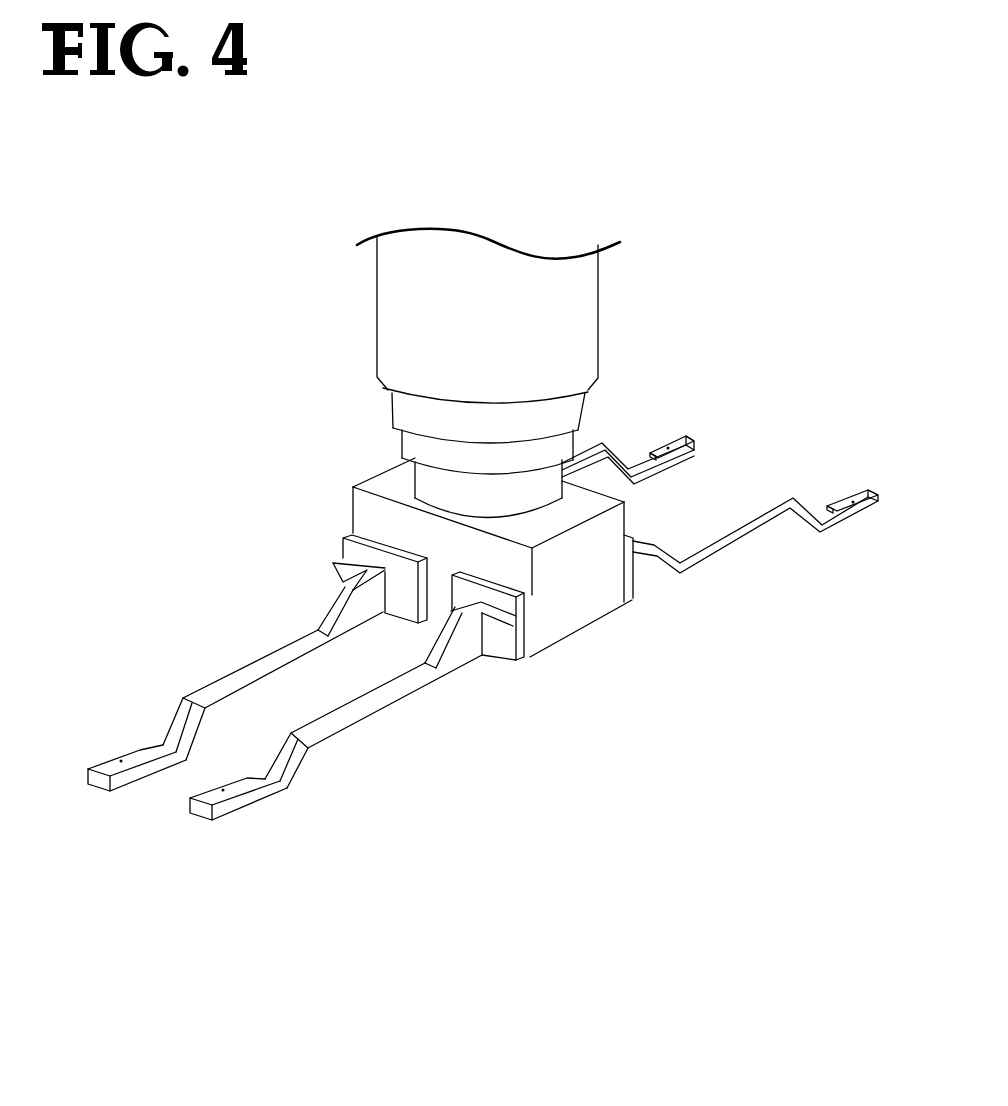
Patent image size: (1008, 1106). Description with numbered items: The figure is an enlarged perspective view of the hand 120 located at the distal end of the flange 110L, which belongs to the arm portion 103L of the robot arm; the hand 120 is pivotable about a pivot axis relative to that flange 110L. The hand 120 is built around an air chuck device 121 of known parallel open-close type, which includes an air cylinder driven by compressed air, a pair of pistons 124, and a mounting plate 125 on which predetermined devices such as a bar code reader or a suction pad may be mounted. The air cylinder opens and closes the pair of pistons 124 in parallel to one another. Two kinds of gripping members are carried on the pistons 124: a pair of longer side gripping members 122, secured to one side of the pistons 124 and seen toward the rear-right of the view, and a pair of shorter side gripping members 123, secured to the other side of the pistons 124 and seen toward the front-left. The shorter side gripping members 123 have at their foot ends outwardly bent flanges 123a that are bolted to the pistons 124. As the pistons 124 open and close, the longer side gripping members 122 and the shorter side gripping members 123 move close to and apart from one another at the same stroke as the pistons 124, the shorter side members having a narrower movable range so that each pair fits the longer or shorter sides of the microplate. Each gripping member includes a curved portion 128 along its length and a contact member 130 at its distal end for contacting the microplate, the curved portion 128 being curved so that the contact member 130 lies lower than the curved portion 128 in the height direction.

The lens barrel 103L is at (325, 297).
The flange 110L is at (400, 412).
The hand 120 is at (601, 673).
The air chuck device 121 is at (333, 471).
The longer side gripping members 122 is at (740, 505).
The shorter side gripping members 123 is at (323, 698).
The flanges 123a is at (333, 576).
The pistons 124 is at (463, 598).
The mounting plate 125 is at (366, 516).
The curved portion 128 is at (162, 705).
The contact member 130 is at (132, 754).